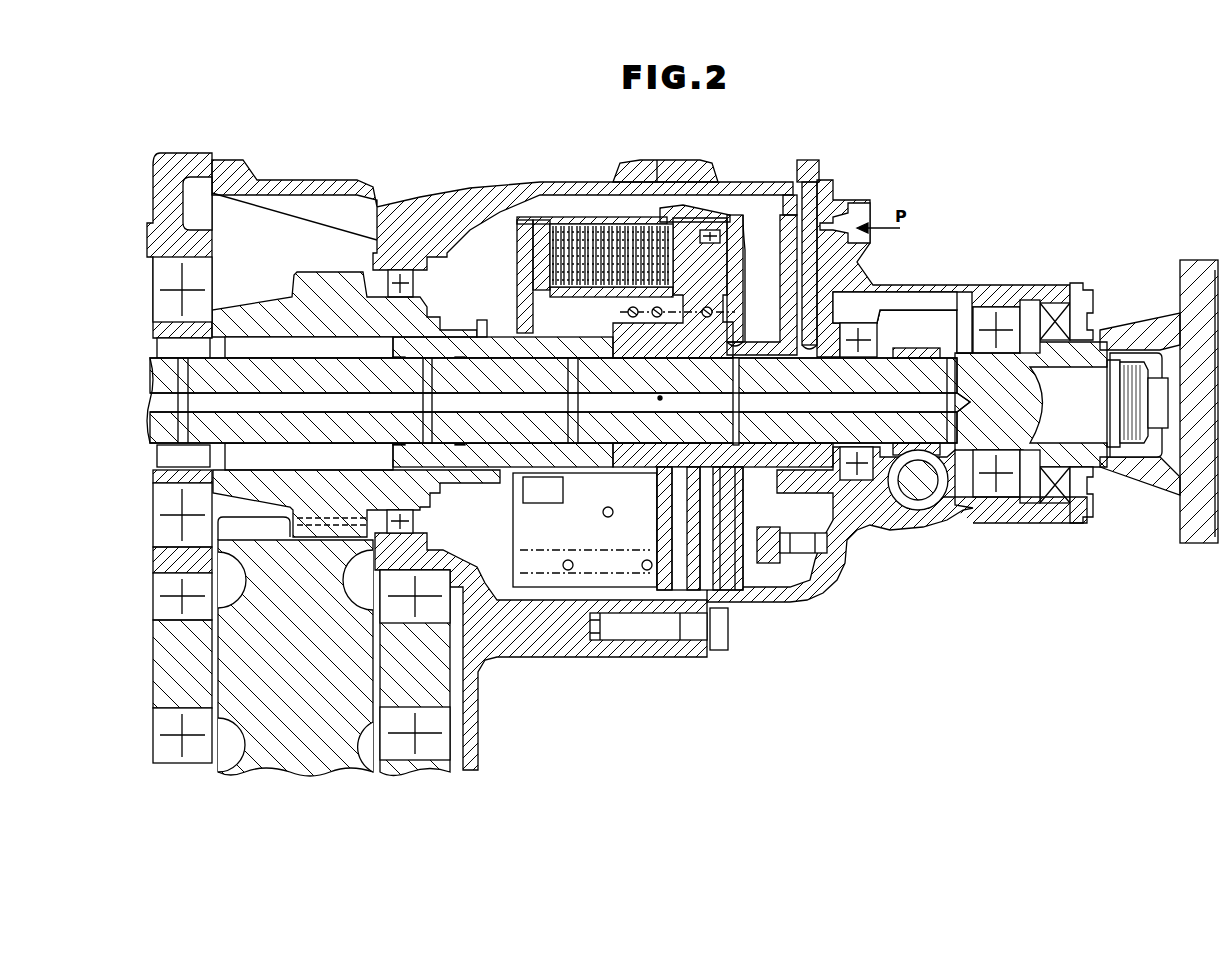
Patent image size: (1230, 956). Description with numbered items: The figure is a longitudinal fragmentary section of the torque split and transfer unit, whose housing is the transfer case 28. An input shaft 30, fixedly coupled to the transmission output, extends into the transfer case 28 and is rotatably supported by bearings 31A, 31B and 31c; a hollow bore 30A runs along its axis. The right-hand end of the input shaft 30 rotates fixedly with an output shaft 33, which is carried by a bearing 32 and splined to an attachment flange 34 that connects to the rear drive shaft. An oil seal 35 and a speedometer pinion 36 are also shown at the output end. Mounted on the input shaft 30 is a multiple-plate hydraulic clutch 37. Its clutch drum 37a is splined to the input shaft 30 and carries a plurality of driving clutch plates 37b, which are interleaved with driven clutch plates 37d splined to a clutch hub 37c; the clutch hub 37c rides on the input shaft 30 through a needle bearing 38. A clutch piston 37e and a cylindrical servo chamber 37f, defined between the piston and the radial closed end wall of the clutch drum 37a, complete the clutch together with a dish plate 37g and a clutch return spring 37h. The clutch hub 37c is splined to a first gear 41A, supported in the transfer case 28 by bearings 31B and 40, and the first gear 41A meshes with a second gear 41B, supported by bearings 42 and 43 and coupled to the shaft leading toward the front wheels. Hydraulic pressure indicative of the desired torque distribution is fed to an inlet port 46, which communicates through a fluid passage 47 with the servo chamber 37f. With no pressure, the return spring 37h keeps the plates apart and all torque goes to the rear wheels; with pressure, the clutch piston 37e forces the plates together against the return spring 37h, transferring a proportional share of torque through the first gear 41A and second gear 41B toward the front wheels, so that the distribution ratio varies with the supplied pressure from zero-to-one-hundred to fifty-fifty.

The transfer case 28 is at (430, 207).
The input shaft 30 is at (150, 383).
The shaft bore 30A is at (200, 410).
The bearing 31A is at (163, 352).
The bearing 31B is at (156, 310).
The bearing 31c is at (848, 535).
The bearing 32 is at (990, 492).
The output shaft 33 is at (987, 363).
The attachment flange 34 is at (1180, 513).
The oil seal 35 is at (1053, 497).
The pinion 36 is at (918, 500).
The multiple-plate hydraulic clutch 37 is at (627, 205).
The clutch drum 37a is at (660, 207).
The driving clutch plates 37b is at (558, 218).
The clutch hub 37c is at (500, 333).
The driven clutch plates 37d is at (567, 225).
The clutch piston 37e is at (712, 228).
The cylindrical servo chamber 37f is at (748, 288).
The dish plate 37g is at (710, 230).
The clutch return spring 37h is at (622, 309).
The needle bearing 38 is at (562, 460).
The bearing 40 is at (400, 255).
The first gear 41A is at (303, 272).
The second gear 41B is at (200, 668).
The bearing 42 is at (157, 735).
The bearing 43 is at (445, 735).
The inlet port 46 is at (848, 218).
The fluid passage 47 is at (812, 307).